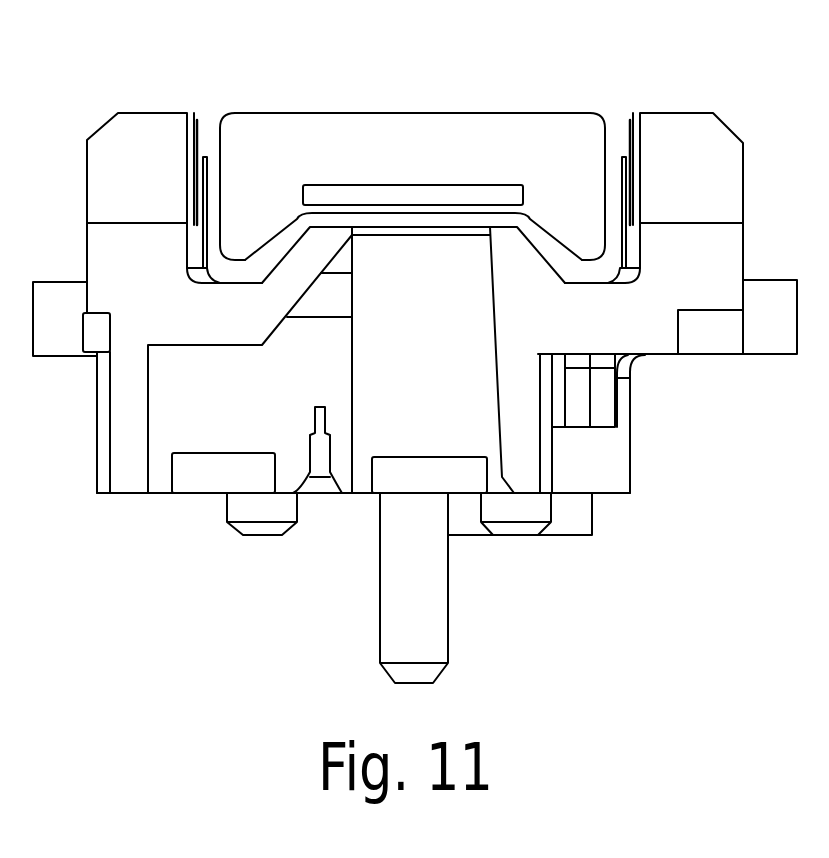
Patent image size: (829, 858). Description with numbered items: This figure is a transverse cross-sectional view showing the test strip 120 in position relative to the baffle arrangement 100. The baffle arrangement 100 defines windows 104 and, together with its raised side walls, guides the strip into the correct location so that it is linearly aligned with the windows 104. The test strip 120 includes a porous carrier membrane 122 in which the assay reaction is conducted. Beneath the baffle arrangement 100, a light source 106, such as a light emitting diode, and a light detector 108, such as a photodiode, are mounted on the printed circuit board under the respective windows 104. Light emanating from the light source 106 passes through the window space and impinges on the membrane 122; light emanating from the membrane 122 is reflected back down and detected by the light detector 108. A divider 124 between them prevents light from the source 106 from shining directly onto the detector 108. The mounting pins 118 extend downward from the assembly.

The baffle arrangement 100 is at (80, 106).
The window 104 is at (445, 352).
The light source 106 is at (405, 462).
The light detector 108 is at (187, 496).
The mounting pin 118 is at (265, 533).
The test strip 120 is at (274, 130).
The porous carrier membrane 122 is at (415, 195).
The divider 124 is at (315, 496).